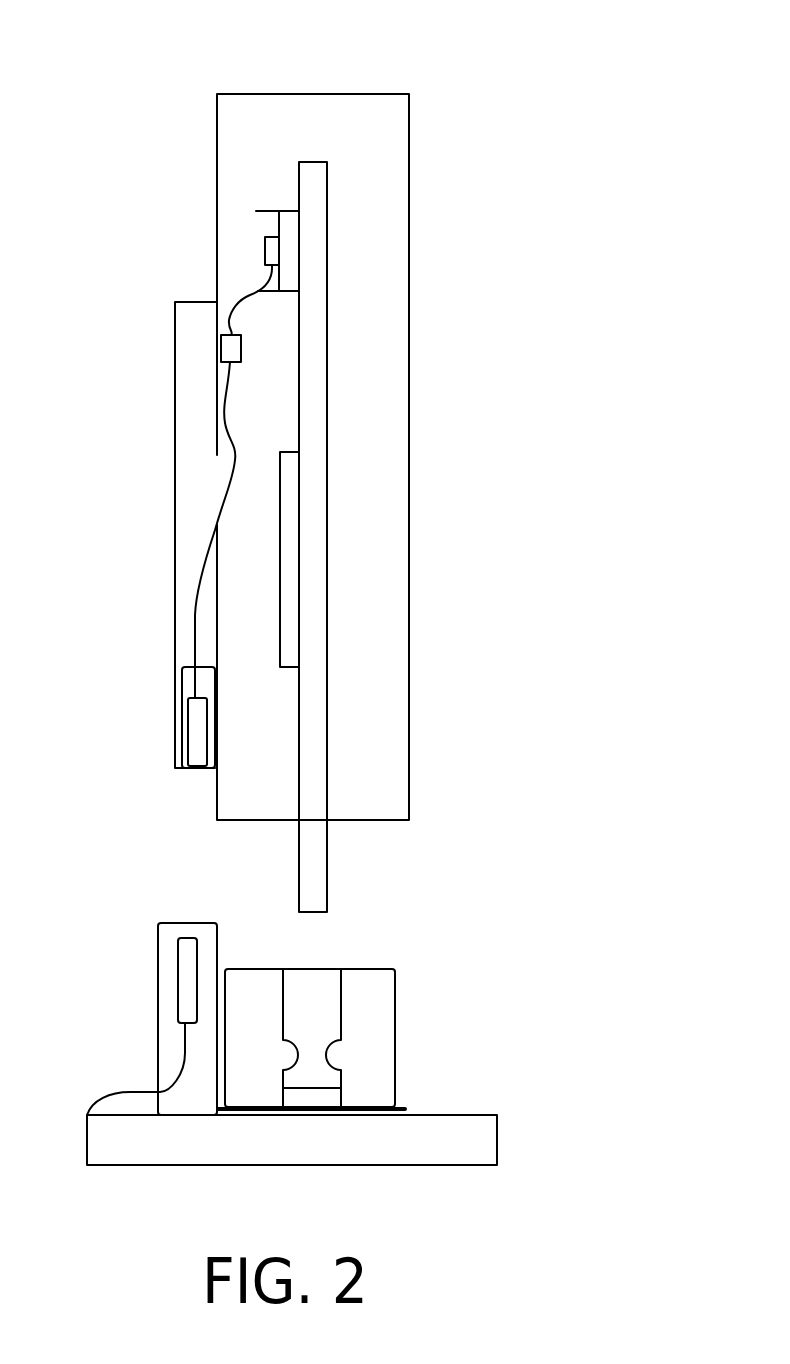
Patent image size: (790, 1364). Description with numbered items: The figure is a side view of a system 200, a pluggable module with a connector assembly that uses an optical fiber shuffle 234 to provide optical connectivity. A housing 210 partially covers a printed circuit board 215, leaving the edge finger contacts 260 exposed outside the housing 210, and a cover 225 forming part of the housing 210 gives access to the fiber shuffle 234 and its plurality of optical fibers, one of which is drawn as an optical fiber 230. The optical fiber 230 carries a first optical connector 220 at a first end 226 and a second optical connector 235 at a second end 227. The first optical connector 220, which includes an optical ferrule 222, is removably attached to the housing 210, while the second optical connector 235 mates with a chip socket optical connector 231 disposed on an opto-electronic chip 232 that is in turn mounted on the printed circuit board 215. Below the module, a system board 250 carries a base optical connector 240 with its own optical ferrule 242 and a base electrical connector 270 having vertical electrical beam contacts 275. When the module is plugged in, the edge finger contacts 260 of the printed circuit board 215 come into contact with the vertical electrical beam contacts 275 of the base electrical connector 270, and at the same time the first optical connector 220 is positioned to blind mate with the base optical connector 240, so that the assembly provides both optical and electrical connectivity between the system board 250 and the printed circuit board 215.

The system 200 is at (448, 72).
The housing 210 is at (328, 94).
The printed circuit board 215 is at (330, 297).
The first optical connector 220 is at (182, 700).
The optical ferrule 222 is at (197, 748).
The cover 225 is at (177, 423).
The first end 226 is at (152, 773).
The second end 227 is at (252, 218).
The optical fiber 230 is at (225, 333).
The chip socket optical connector 231 is at (257, 211).
The opto-electronic chip 232 is at (293, 211).
The optical fiber shuffle 234 is at (233, 364).
The second optical connector 235 is at (265, 250).
The base optical connector 240 is at (158, 1020).
The optical ferrule 242 is at (185, 938).
The system board 250 is at (500, 1115).
The edge finger contacts 260 is at (328, 900).
The base electrical connector 270 is at (394, 1028).
The vertical electrical beam contacts 275 is at (253, 1110).